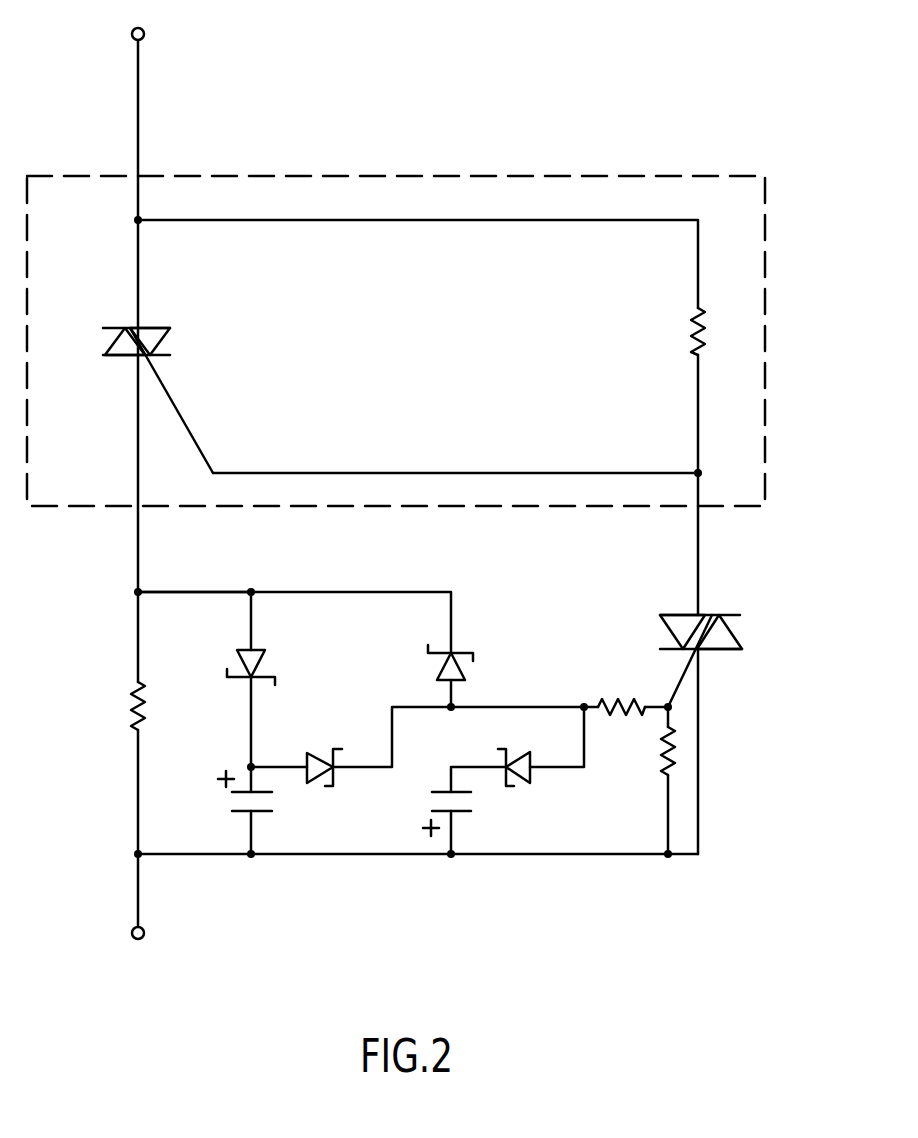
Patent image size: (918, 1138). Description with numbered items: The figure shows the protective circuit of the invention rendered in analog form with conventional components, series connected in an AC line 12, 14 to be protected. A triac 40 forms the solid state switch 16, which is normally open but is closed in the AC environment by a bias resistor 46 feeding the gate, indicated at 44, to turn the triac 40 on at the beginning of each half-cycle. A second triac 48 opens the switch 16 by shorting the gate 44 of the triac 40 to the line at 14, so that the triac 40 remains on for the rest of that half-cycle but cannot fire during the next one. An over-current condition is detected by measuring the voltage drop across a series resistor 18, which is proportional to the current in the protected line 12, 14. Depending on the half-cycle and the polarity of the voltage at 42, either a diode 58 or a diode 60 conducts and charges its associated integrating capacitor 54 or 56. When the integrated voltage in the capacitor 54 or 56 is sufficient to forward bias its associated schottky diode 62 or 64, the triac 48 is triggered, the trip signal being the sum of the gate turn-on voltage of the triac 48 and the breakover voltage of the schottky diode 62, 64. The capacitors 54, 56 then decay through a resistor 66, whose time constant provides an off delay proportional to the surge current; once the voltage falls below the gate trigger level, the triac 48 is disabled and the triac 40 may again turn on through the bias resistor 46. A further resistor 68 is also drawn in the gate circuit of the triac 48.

The AC line 12 is at (145, 35).
The AC line 14 is at (145, 934).
The solid state switch 16 is at (612, 176).
The series resistor 18 is at (131, 700).
The triac 40 is at (114, 357).
The voltage polarity point 42 is at (134, 592).
The gate 44 is at (374, 471).
The bias resistor 46 is at (702, 323).
The second triac 48 is at (734, 633).
The integrating capacitor 54 is at (240, 811).
The integrating capacitor 56 is at (462, 812).
The diode 58 is at (263, 661).
The diode 60 is at (456, 655).
The schottky diode 62 is at (336, 781).
The schottky diode 64 is at (530, 772).
The resistor 66 is at (610, 700).
The resistor 68 is at (672, 770).